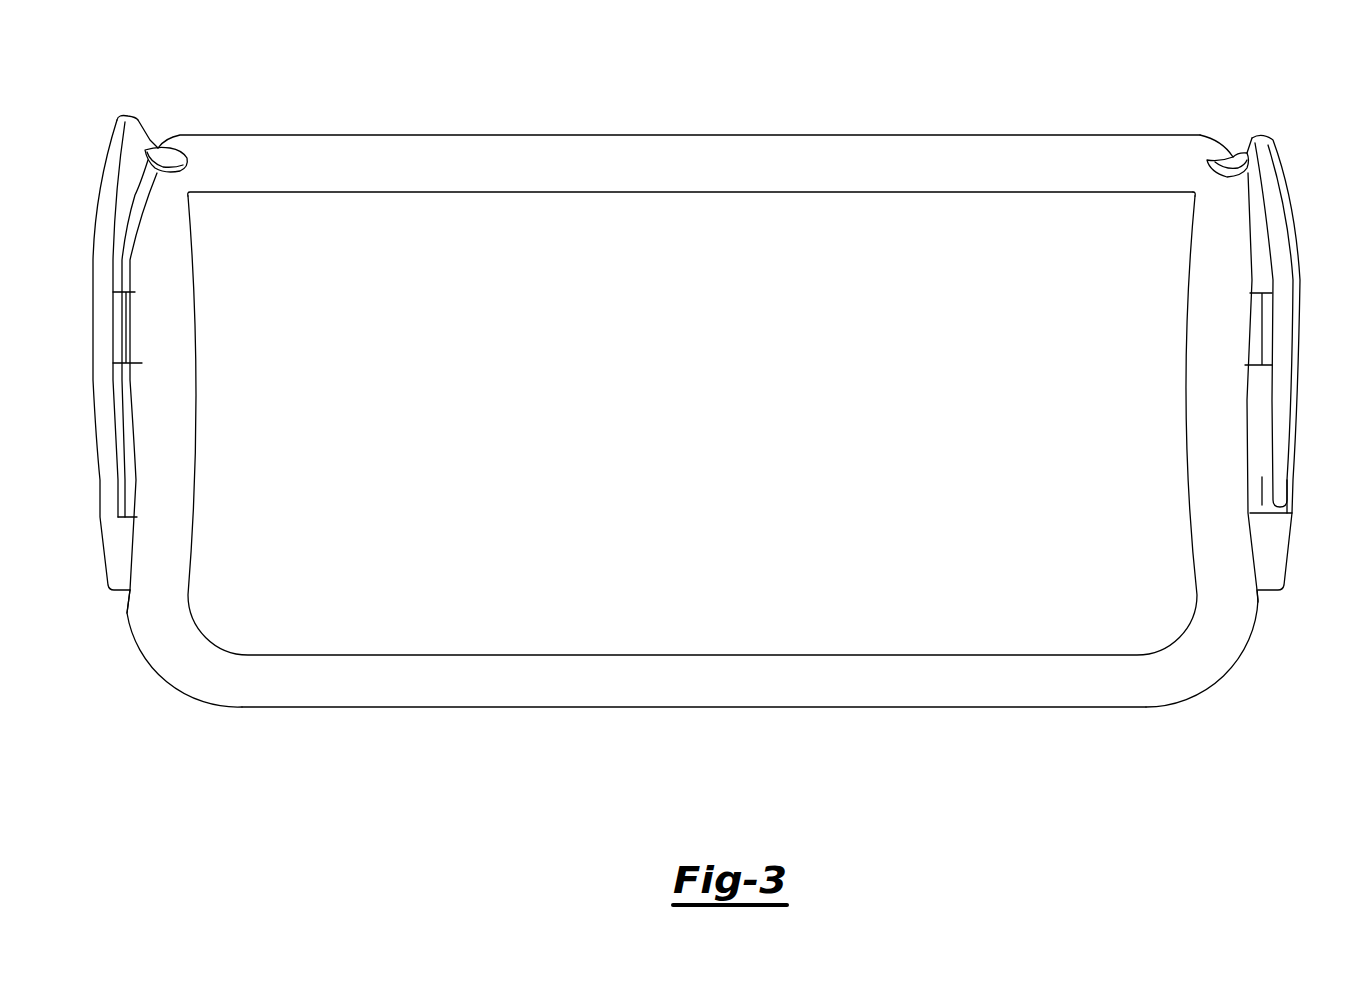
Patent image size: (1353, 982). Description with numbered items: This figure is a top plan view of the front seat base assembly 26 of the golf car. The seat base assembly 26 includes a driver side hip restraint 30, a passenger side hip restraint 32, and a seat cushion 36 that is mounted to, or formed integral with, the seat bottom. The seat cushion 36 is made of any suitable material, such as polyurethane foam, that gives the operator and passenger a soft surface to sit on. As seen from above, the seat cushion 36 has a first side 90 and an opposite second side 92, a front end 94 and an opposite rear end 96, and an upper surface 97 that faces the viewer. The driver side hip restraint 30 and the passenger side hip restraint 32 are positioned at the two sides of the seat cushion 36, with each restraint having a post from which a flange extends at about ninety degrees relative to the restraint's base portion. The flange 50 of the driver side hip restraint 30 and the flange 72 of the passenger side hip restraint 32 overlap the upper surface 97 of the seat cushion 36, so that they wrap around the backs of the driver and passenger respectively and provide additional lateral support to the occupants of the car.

The seat base assembly 26 is at (742, 98).
The driver side hip restraint 30 is at (1293, 240).
The passenger side hip restraint 32 is at (93, 360).
The seat cushion 36 is at (395, 133).
The flange 50 is at (1213, 158).
The flange 72 is at (177, 158).
The first side 90 is at (1258, 602).
The second side 92 is at (128, 613).
The front end 94 is at (703, 688).
The rear end 96 is at (855, 133).
The upper surface 97 is at (513, 203).